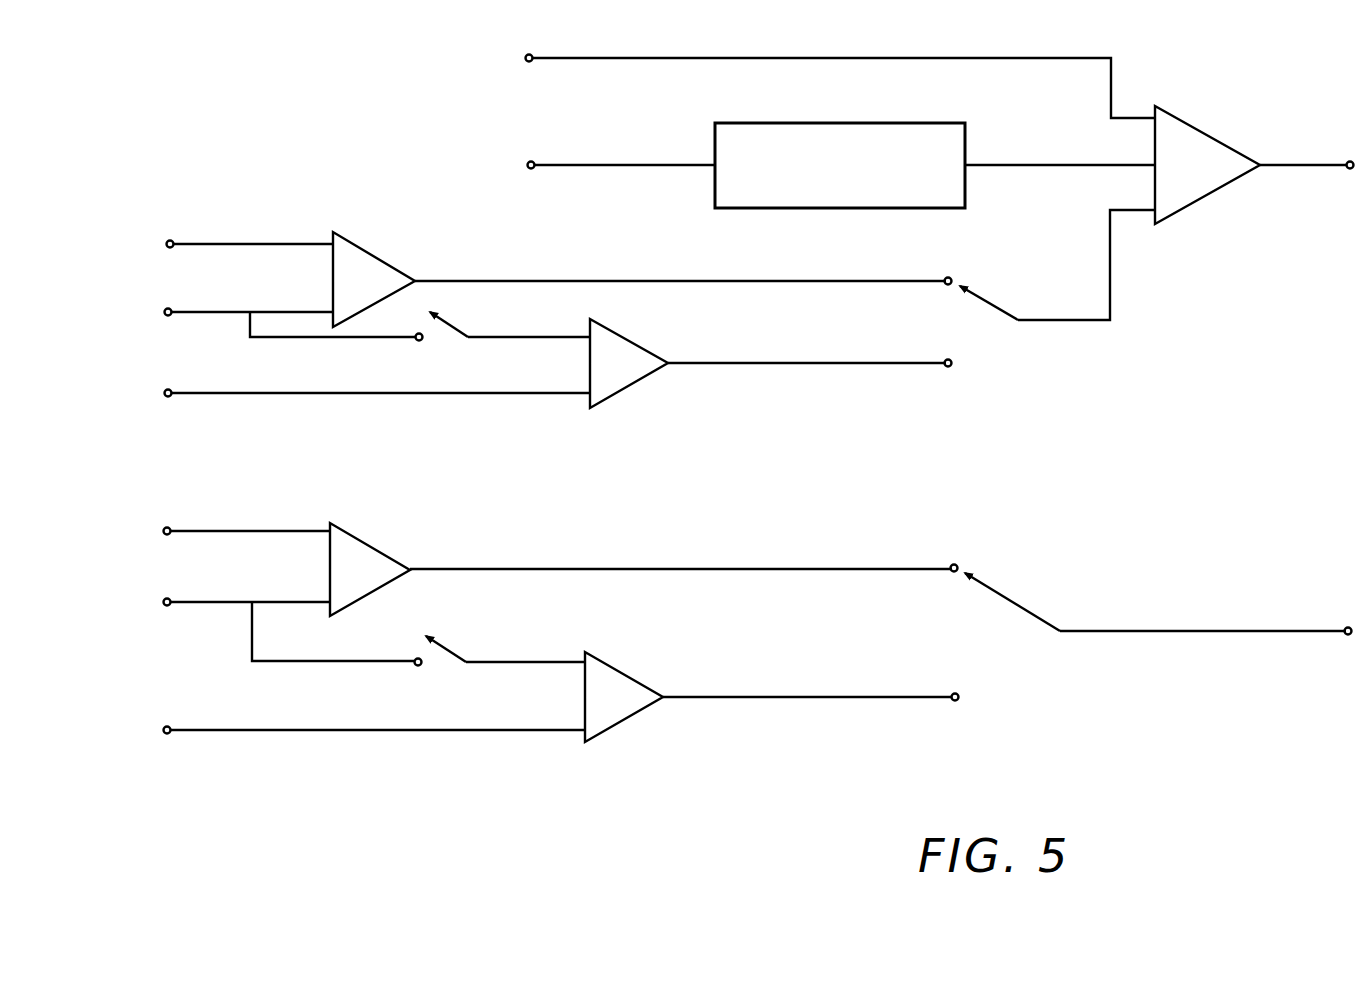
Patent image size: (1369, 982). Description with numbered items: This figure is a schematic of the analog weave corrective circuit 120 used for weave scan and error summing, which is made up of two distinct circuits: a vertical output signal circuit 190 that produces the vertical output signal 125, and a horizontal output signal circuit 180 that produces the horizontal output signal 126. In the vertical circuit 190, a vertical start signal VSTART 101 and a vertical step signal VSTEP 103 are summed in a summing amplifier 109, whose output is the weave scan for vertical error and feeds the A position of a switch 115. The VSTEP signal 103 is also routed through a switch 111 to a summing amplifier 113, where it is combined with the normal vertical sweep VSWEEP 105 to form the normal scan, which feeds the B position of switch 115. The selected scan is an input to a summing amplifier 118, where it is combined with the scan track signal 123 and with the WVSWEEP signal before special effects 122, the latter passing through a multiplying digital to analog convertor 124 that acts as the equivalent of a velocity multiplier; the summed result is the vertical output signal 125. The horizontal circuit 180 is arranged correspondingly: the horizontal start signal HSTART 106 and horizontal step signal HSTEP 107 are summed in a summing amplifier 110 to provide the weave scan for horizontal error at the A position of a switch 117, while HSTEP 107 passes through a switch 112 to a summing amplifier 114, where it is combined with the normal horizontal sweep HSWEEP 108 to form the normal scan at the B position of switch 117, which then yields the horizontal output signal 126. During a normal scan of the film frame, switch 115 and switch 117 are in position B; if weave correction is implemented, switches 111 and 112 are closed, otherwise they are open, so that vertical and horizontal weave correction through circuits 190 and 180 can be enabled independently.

The VSTART signal 101 is at (196, 248).
The VSTEP signal 103 is at (198, 314).
The VSWEEP signal 105 is at (218, 396).
The HSTART signal 106 is at (196, 535).
The HSTEP signal 107 is at (198, 605).
The HSWEEP signal 108 is at (208, 733).
The summing amplifier 109 is at (377, 258).
The summing amplifier 110 is at (372, 546).
The switch 111 is at (430, 342).
The switch 112 is at (430, 666).
The summing amplifier 113 is at (636, 383).
The summing amplifier 114 is at (624, 720).
The switch 115 is at (990, 310).
The switch 117 is at (1018, 612).
The summing amplifier 118 is at (1180, 208).
The analog weave corrective circuit 120 is at (258, 830).
The WVSWEEP signal before special effects 122 is at (656, 163).
The scan track signal 123 is at (572, 62).
The multiplying digital to analog convertor 124 is at (910, 125).
The vertical output signal 125 is at (1296, 163).
The horizontal output signal 126 is at (1312, 634).
The horizontal output signal circuit 180 is at (1222, 695).
The vertical output signal circuit 190 is at (1203, 363).